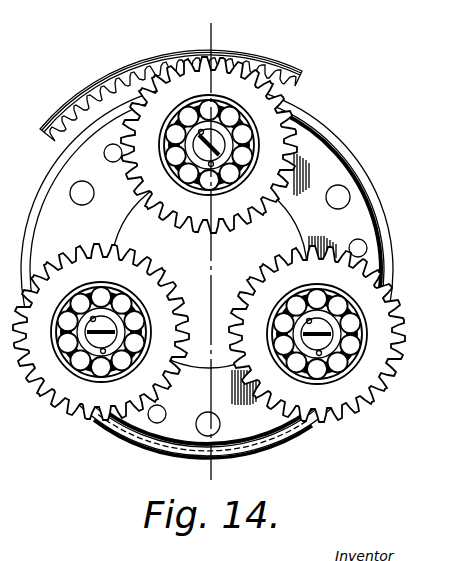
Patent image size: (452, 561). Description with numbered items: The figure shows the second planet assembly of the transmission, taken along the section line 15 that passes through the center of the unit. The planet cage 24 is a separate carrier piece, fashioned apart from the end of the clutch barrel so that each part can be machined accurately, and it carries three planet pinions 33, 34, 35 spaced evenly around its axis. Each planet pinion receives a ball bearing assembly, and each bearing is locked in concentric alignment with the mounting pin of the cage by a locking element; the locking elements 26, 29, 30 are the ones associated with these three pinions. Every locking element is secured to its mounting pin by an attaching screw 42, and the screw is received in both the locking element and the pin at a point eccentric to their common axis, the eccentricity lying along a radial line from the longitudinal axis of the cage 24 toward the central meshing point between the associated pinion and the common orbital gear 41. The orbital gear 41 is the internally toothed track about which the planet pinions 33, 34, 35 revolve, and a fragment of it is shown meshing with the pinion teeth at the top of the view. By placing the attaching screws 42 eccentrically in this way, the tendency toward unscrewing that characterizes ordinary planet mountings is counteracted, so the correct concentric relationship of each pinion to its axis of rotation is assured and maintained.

The section line 15- 15 is at (211, 23).
The planet cage 24 is at (100, 236).
The locking element 26 is at (228, 153).
The locking element 29 is at (116, 336).
The locking element 30 is at (306, 327).
The planet pinion 33 is at (197, 112).
The planet pinion 34 is at (79, 304).
The planet pinion 35 is at (303, 294).
The orbital gear 41 is at (128, 68).
The attaching screw 42 is at (204, 150).